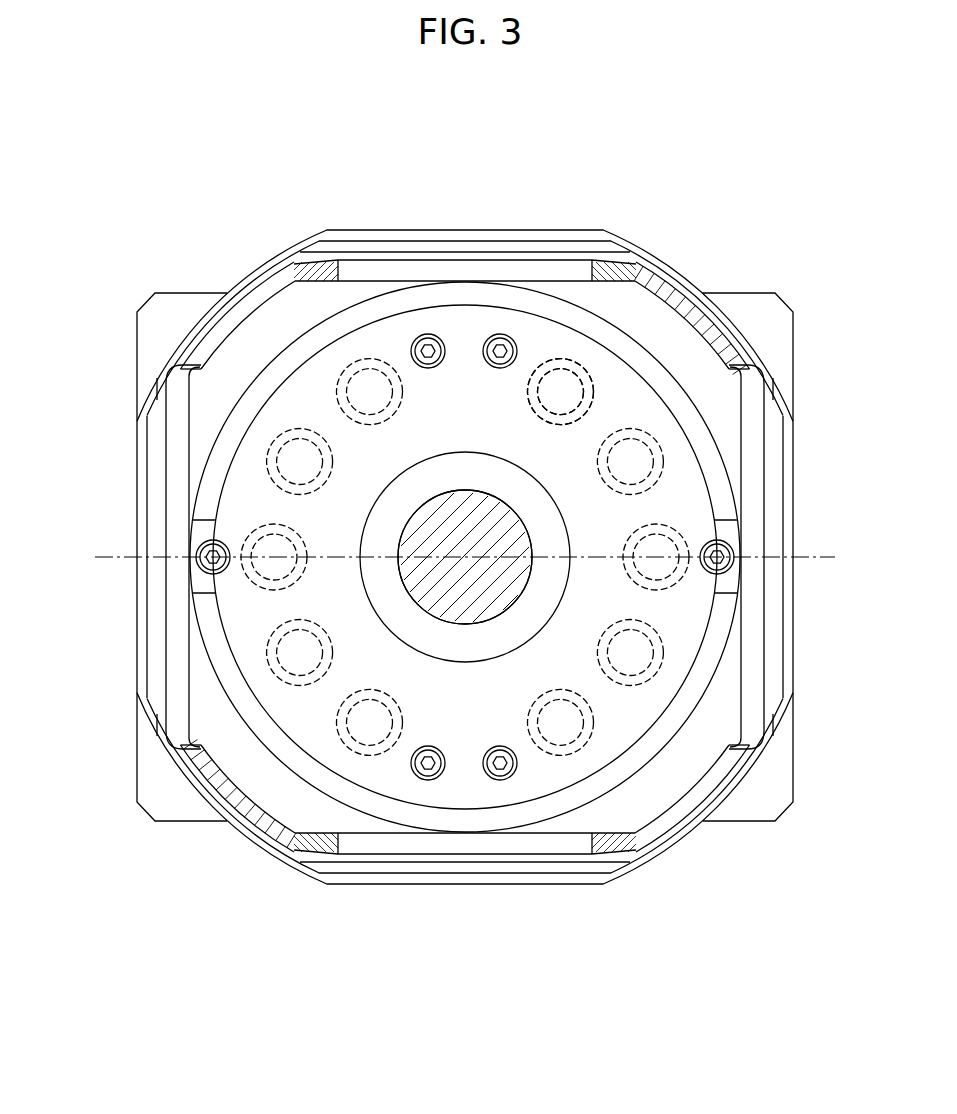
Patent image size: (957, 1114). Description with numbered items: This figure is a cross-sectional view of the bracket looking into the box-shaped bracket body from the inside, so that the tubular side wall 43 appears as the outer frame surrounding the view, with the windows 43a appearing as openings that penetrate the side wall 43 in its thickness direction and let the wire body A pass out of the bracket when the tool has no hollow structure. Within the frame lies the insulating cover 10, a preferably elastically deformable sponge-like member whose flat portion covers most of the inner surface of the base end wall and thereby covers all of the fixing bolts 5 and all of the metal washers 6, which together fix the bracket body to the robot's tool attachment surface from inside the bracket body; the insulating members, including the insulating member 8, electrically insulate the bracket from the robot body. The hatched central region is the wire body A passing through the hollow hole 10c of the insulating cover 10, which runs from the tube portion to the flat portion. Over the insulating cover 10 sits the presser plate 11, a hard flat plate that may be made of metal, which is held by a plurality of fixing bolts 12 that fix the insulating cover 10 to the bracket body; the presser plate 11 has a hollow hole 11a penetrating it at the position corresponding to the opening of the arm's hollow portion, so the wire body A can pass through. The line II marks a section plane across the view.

The side wall 43 is at (303, 247).
The window 43a is at (348, 278).
The presser plate 11 is at (680, 490).
The hollow hole 11a is at (372, 592).
The insulating cover 10 is at (543, 598).
The hollow hole 10c is at (490, 492).
The wire body A is at (428, 525).
The fixing bolt 5 is at (557, 357).
The metal washer 6 is at (584, 362).
The insulating member 8 is at (615, 315).
The fixing bolt 12 is at (428, 334).
The section line II is at (462, 557).